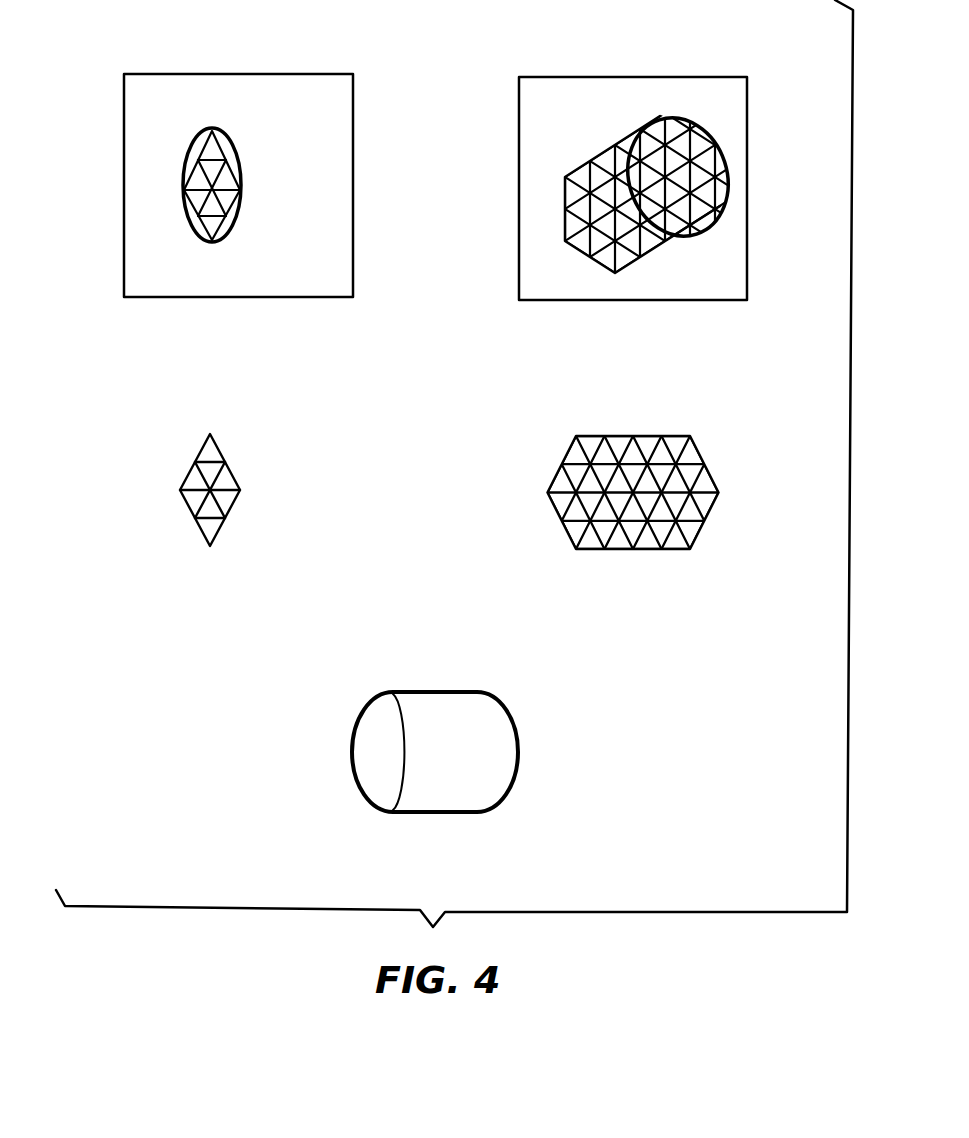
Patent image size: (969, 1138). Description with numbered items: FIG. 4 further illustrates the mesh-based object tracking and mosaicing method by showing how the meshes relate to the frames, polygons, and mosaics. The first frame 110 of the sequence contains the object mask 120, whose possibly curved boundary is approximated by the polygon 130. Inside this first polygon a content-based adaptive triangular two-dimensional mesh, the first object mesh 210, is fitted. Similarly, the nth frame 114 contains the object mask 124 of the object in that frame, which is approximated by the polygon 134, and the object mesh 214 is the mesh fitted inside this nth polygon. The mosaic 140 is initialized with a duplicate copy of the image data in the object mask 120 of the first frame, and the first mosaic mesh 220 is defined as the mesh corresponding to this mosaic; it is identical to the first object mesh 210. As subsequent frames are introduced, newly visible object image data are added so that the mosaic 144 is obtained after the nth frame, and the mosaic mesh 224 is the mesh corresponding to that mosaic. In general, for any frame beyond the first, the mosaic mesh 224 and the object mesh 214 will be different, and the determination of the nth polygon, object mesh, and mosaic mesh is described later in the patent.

The first frame 110 is at (303, 297).
The nth frame 114 is at (747, 287).
The object mask 120 is at (240, 163).
The object mask in the nth frame 124 is at (665, 247).
The polygon 130 is at (222, 150).
The polygon in the nth frame 134 is at (605, 265).
The first object mesh 210 is at (210, 220).
The object mesh 214 is at (697, 155).
The first mosaic mesh 220 is at (193, 498).
The mosaic mesh 224 is at (702, 485).
The mosaic 140 is at (432, 749).
The mosaic 144 is at (477, 732).